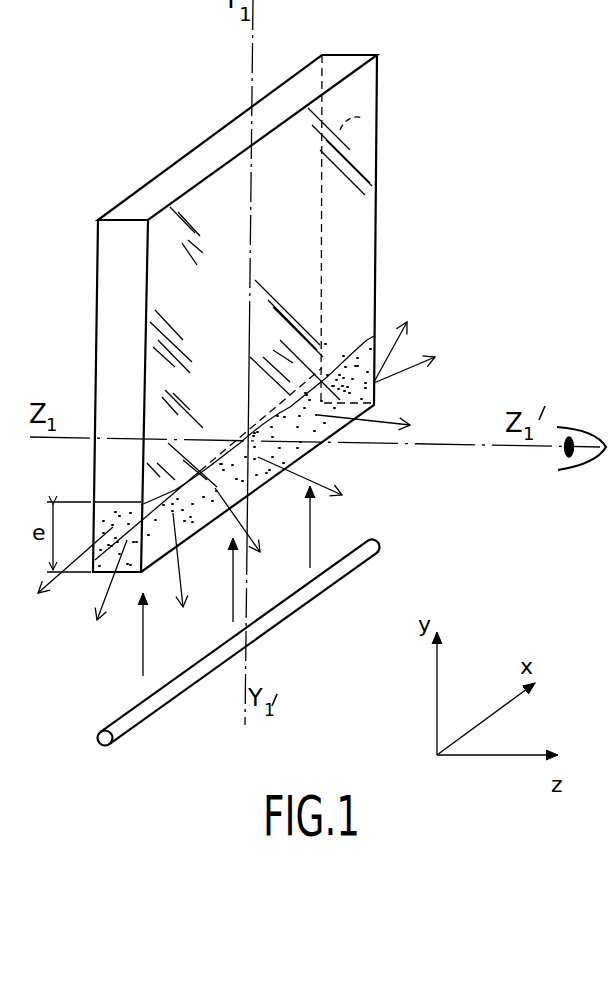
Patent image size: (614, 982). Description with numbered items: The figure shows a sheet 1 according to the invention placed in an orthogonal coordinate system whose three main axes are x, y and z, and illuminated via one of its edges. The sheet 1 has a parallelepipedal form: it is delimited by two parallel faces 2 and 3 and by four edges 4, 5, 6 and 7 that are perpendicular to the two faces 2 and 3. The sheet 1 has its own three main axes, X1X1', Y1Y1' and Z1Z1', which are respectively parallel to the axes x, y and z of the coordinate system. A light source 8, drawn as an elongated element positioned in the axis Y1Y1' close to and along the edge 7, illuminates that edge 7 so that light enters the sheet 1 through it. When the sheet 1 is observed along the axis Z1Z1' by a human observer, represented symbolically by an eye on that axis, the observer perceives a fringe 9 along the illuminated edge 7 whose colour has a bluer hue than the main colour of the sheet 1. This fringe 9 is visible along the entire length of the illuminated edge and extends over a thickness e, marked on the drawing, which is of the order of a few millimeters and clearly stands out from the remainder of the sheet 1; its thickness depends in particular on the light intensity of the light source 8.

The sheet 1 is at (188, 136).
The face 2 is at (343, 247).
The face 3 is at (168, 230).
The edge 4 is at (112, 288).
The edge 5 is at (290, 97).
The edge 6 is at (377, 115).
The edge 7 is at (247, 500).
The light source 8 is at (165, 712).
The fringe 9 is at (302, 428).